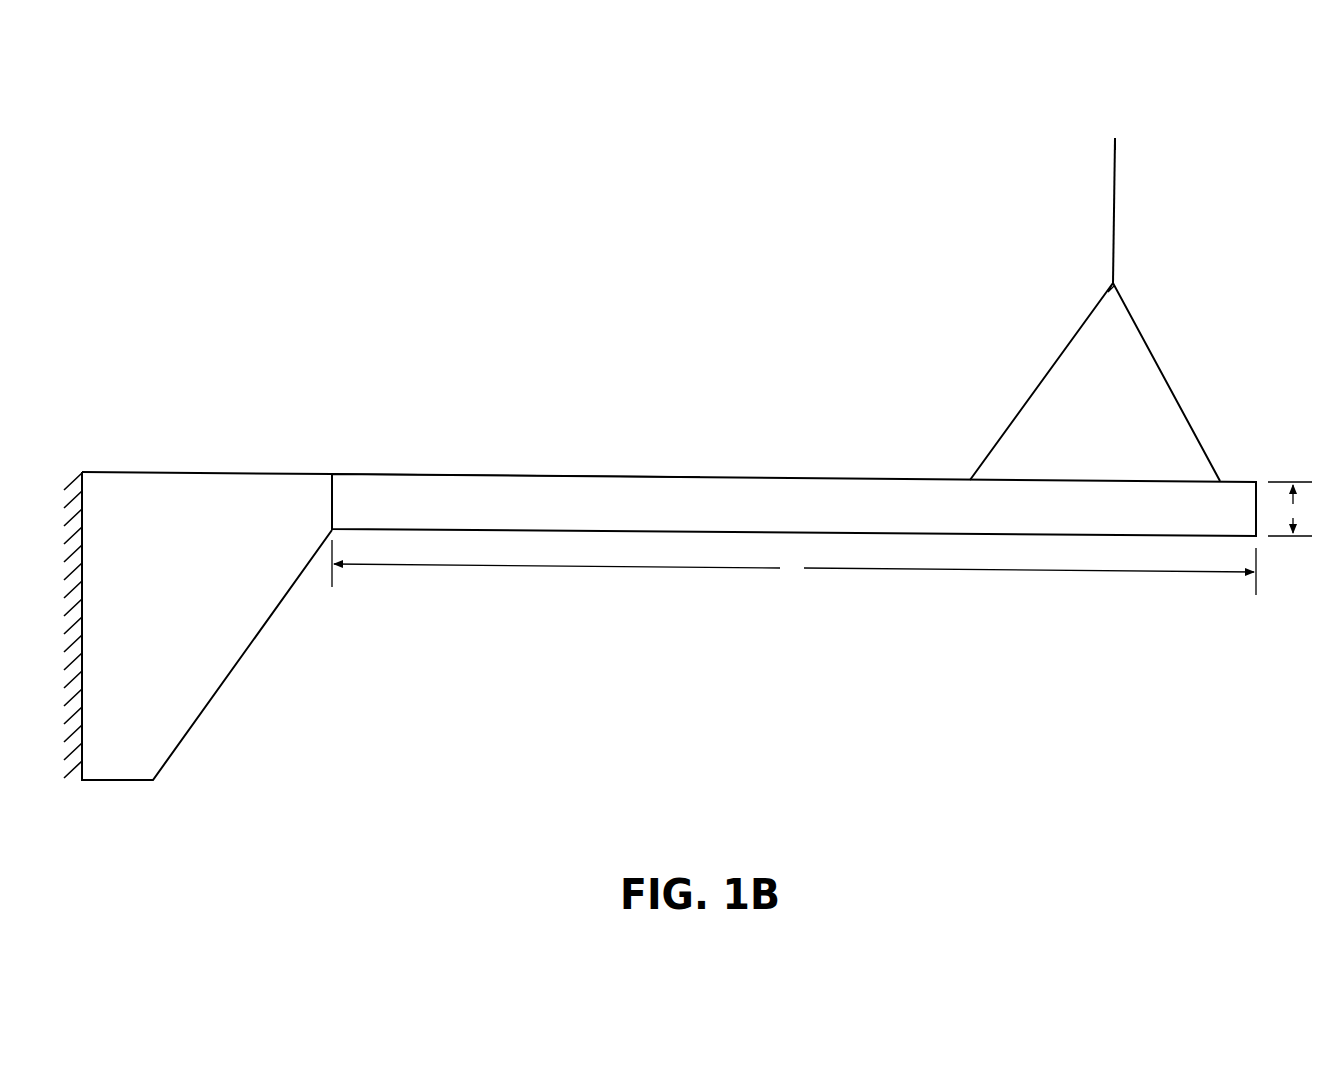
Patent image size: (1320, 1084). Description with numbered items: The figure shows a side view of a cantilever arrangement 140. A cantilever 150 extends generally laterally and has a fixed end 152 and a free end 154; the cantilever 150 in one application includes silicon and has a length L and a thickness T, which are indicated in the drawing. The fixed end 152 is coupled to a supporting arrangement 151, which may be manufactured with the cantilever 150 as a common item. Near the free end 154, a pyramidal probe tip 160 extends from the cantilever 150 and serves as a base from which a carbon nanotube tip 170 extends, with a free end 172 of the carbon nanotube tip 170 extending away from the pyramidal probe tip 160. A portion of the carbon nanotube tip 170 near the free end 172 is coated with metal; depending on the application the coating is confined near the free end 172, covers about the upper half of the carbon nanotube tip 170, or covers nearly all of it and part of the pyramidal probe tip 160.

The cantilever arrangement 140 is at (1097, 270).
The cantilever 150 is at (553, 475).
The supporting arrangement 151 is at (173, 473).
The fixed end 152 is at (449, 428).
The free end 154 is at (1166, 602).
The pyramidal probe tip 160 is at (1152, 352).
The carbon nanotube tip 170 is at (1115, 215).
The free end of the carbon nanotube tip 172 is at (1115, 138).